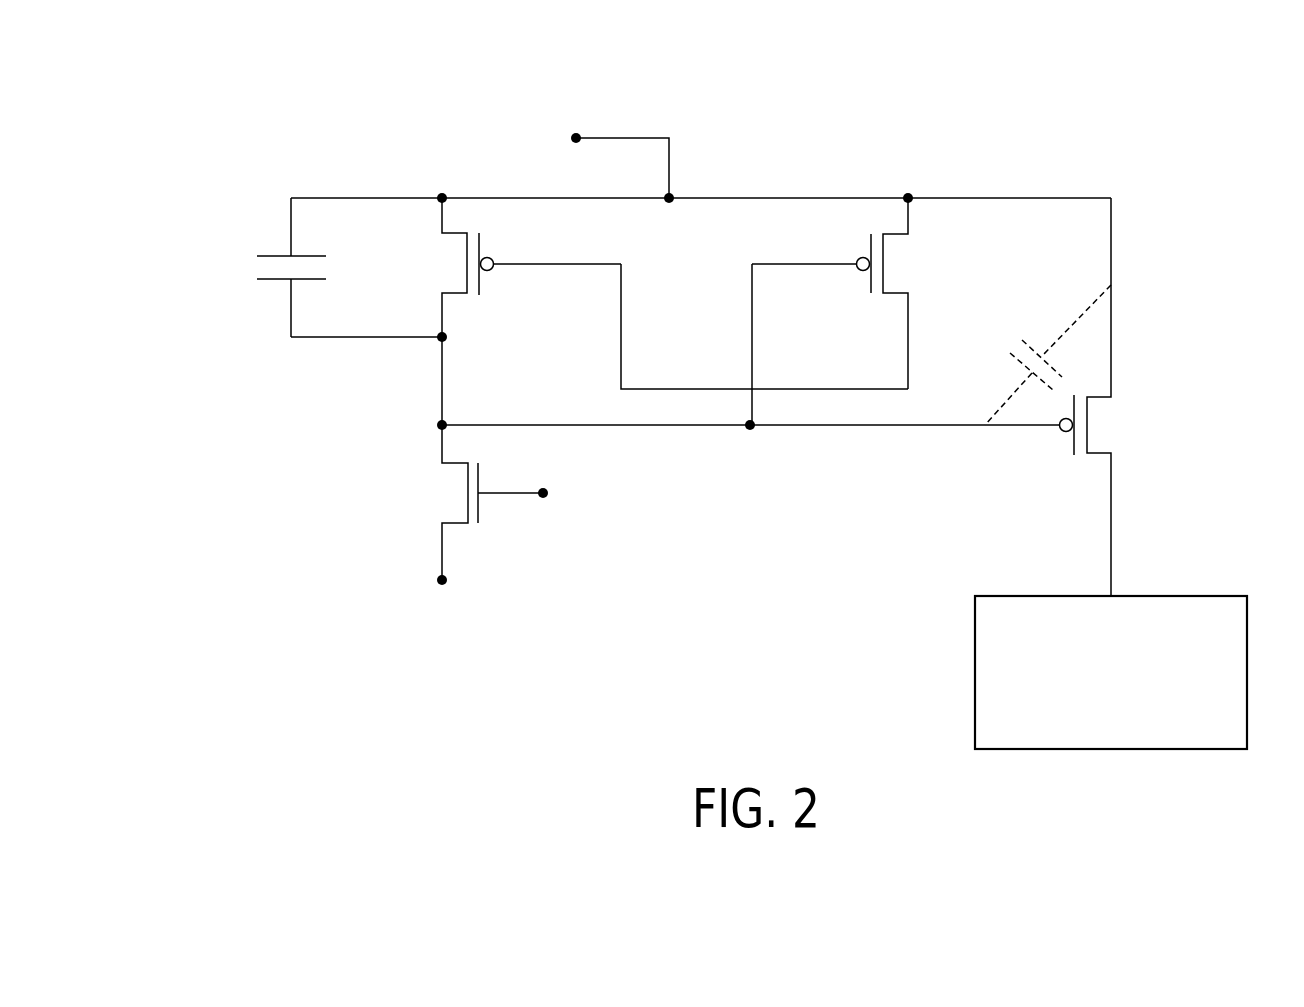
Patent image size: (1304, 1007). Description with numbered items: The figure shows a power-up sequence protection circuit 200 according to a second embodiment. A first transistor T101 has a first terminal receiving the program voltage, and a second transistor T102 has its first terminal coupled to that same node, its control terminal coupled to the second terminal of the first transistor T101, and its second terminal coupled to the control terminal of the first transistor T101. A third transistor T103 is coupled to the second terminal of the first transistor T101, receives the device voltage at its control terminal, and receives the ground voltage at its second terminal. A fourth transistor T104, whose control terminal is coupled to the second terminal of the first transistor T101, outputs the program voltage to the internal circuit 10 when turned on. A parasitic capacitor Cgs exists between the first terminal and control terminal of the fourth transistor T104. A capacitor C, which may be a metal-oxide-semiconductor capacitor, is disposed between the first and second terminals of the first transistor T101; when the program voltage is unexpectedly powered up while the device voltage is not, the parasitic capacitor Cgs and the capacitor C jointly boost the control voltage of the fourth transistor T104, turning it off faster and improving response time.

The power-up sequence protection circuit 200 is at (1175, 88).
The internal circuit 10 is at (1218, 689).
The first transistor T101 is at (501, 311).
The second transistor T102 is at (860, 293).
The third transistor T103 is at (466, 505).
The fourth transistor T104 is at (1115, 397).
The capacitor C is at (337, 267).
The parasitic capacitor Cgs is at (1042, 355).